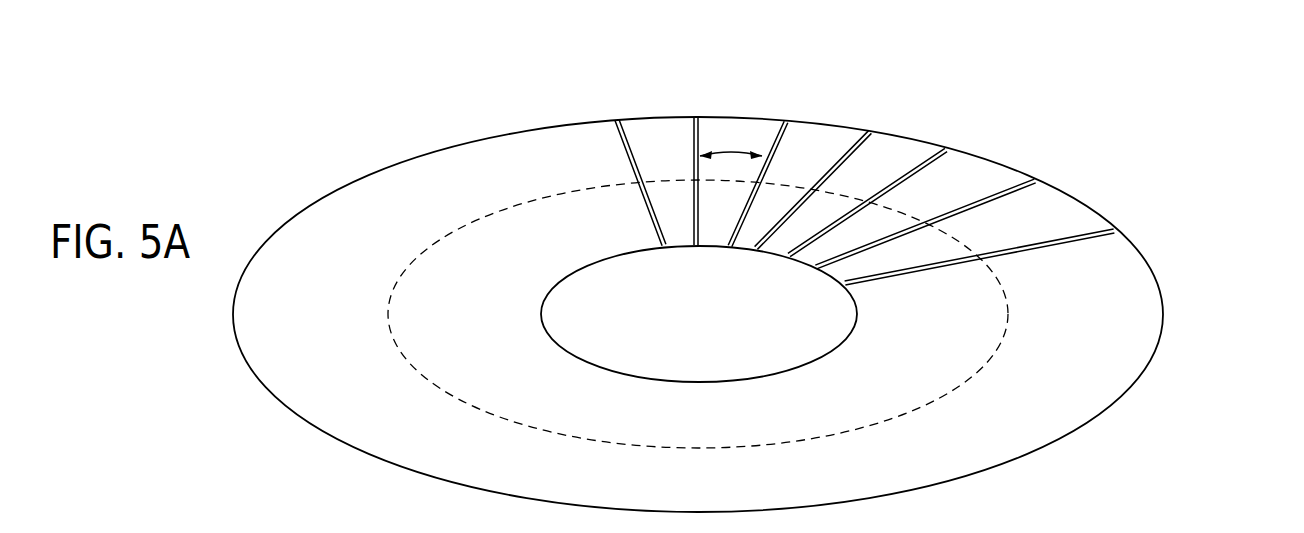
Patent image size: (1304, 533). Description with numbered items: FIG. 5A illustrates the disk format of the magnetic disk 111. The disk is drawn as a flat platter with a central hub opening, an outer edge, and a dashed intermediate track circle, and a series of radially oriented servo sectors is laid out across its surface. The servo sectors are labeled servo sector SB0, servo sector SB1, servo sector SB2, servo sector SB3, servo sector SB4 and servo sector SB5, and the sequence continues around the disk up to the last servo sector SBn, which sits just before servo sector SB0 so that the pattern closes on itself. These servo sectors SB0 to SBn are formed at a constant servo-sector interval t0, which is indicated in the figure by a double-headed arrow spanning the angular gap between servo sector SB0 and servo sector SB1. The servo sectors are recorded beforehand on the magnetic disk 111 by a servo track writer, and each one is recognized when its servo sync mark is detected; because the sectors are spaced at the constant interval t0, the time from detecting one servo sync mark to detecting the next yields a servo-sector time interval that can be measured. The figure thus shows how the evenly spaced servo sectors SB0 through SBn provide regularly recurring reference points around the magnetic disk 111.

The magnetic disk 111 is at (1166, 303).
The servo sector SBn is at (614, 142).
The servo sector SB0 is at (696, 142).
The servo-sector interval t0 is at (728, 152).
The servo sector SB1 is at (786, 138).
The servo sector SB2 is at (858, 148).
The servo sector SB3 is at (932, 165).
The servo sector SB4 is at (1017, 190).
The servo sector SB5 is at (1090, 240).